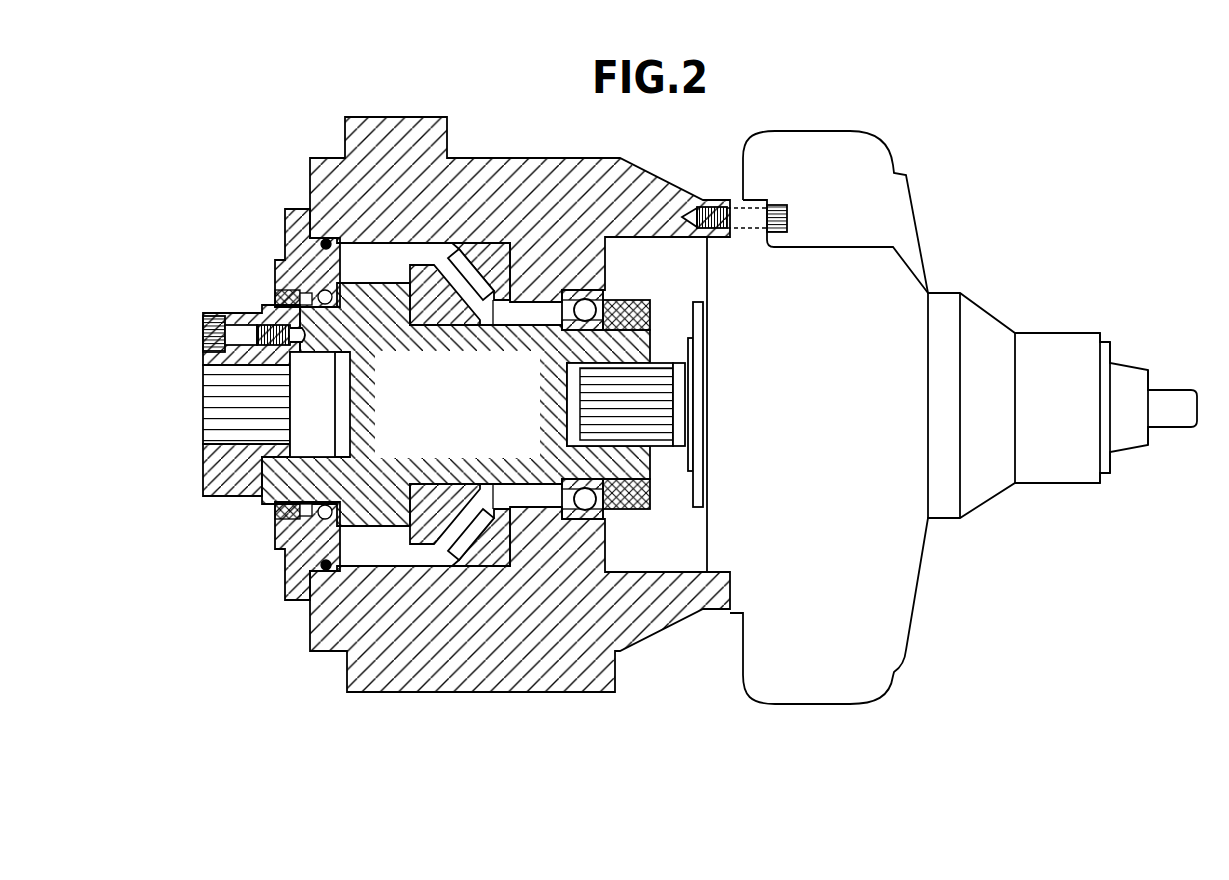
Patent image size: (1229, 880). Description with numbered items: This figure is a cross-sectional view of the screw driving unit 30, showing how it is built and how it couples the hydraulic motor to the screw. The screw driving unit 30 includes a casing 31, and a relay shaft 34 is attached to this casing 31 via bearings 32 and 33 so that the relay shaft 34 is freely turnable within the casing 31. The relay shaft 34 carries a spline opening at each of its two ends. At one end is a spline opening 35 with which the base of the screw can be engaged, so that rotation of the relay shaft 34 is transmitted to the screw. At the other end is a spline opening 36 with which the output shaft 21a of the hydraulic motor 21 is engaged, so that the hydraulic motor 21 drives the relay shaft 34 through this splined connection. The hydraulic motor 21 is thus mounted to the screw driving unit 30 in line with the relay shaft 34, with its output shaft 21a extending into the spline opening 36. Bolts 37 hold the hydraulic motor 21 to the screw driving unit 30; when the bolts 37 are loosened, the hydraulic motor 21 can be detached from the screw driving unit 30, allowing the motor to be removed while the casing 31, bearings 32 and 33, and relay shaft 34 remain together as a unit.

The screw driving unit 30 is at (295, 94).
The hydraulic motor 21 is at (906, 116).
The output shaft 21a is at (597, 407).
The casing 31 is at (455, 632).
The bearing 32 is at (455, 531).
The bearing 33 is at (607, 509).
The relay shaft 34 is at (343, 277).
The spline opening 35 is at (238, 440).
The spline opening 36 is at (630, 432).
The bolt 37 is at (788, 216).